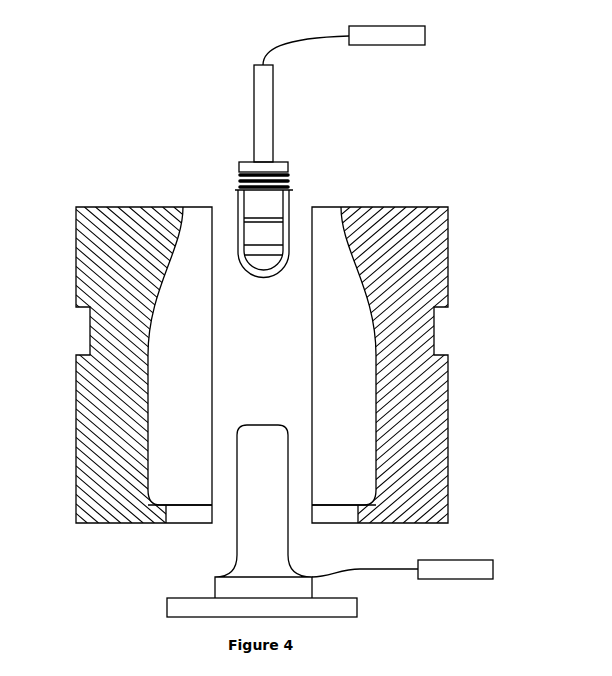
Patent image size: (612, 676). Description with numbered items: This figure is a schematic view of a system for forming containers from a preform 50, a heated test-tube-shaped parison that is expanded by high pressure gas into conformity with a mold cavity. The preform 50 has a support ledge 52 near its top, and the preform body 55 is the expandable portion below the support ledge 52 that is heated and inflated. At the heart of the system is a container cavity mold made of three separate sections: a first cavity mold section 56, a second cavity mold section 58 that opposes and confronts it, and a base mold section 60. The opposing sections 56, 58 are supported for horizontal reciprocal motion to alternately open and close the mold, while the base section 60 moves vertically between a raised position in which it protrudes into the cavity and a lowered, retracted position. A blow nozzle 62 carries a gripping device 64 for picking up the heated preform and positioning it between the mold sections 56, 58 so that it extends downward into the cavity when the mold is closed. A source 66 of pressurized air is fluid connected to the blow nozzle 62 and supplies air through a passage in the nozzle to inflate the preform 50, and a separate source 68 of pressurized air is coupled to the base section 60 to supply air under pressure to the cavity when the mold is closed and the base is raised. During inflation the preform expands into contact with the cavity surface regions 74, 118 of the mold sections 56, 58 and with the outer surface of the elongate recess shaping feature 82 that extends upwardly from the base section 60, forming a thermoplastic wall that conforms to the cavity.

The preform 50 is at (266, 273).
The support ledge 52 is at (236, 185).
The preform body 55 is at (286, 220).
The first cavity mold section 56 is at (82, 262).
The second cavity mold section 58 is at (438, 280).
The base mold section 60 is at (250, 558).
The blow nozzle 62 is at (268, 115).
The gripping device 64 is at (290, 163).
The source of pressurized air 66 is at (398, 45).
The source of pressurized air 68 is at (467, 557).
The cavity surface region 74 is at (200, 357).
The elongate recess shaping feature 82 is at (237, 535).
The cavity surface region 118 is at (325, 386).